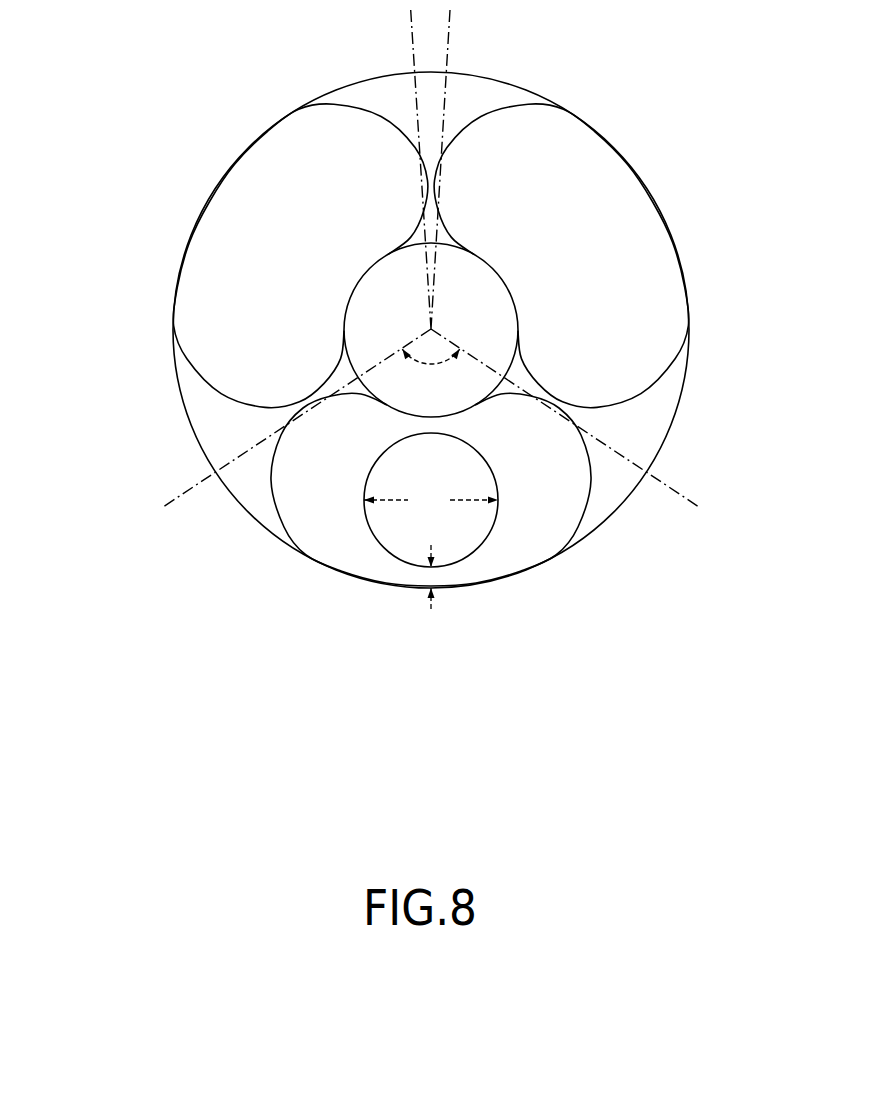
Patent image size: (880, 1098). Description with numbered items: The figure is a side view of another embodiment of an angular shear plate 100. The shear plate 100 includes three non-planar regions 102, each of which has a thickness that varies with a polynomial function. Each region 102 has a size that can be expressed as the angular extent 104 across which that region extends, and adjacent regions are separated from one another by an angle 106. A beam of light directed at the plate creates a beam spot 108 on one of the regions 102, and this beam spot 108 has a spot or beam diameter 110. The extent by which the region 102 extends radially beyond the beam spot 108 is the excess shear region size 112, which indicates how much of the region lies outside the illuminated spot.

The shear plate 100 is at (118, 466).
The non-planar region 102 is at (270, 170).
The angular extent 104 is at (420, 363).
The angle 106 is at (358, 24).
The beam spot 108 is at (413, 538).
The spot diameter 110 is at (431, 498).
The excess shear region size 112 is at (432, 594).